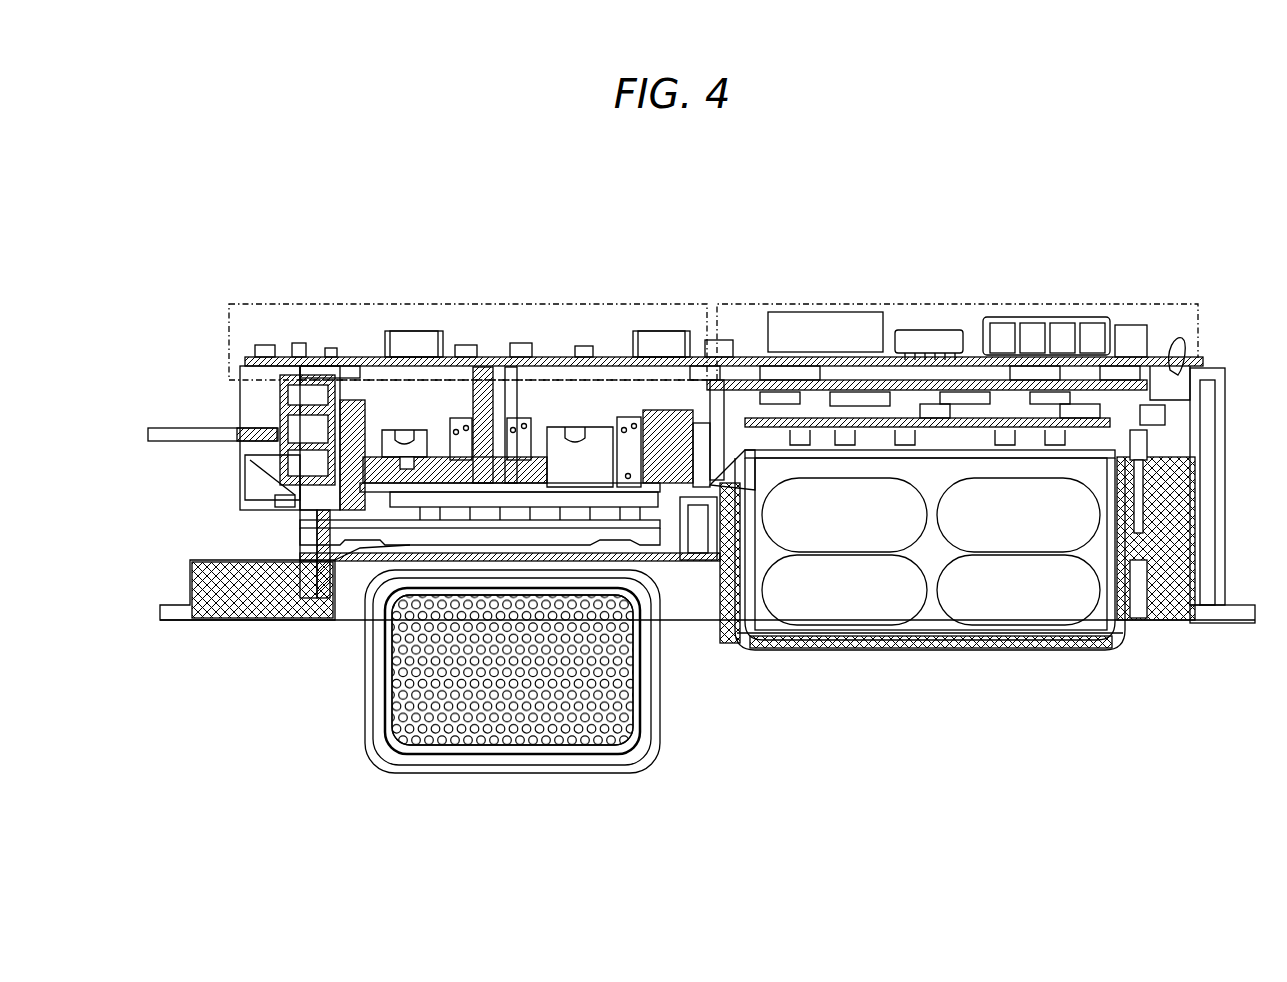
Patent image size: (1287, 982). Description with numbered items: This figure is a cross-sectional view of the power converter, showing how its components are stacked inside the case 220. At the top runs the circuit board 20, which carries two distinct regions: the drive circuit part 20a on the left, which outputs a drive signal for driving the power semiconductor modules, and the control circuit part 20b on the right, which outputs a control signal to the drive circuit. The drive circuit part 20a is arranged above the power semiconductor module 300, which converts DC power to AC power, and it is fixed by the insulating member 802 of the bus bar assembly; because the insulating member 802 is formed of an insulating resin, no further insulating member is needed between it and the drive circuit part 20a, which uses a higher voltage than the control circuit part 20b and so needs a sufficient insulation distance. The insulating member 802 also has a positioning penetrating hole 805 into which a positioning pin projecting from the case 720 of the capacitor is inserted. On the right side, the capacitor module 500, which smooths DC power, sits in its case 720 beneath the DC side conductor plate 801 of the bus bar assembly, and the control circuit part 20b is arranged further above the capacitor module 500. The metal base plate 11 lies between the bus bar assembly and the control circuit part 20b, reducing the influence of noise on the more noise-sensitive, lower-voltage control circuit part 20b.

The circuit board 20 is at (555, 357).
The drive circuit part 20a is at (257, 305).
The control circuit part 20b is at (1150, 305).
The metal base plate 11 is at (937, 350).
The DC side conductor plate 801 is at (673, 357).
The insulating member 802 is at (358, 358).
The positioning penetrating hole 805 is at (300, 407).
The power semiconductor module 300 is at (633, 715).
The capacitor module 500 is at (1000, 588).
The case 720 is at (793, 647).
The case 220 is at (1165, 598).